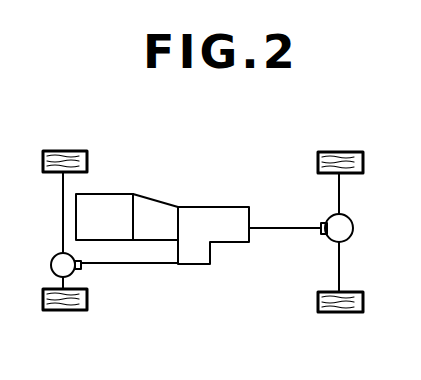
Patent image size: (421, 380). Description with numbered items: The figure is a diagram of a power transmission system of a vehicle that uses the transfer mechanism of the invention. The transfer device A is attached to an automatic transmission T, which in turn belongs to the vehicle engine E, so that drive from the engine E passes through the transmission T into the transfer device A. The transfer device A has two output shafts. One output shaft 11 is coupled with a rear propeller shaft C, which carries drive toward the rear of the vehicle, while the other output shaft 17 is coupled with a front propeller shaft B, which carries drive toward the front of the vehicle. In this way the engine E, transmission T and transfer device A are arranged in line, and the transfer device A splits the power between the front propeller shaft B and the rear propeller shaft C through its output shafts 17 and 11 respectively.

The output shaft 11 is at (251, 226).
The output shaft 17 is at (178, 264).
The vehicle engine E is at (100, 225).
The automatic transmission T is at (157, 225).
The transfer device A is at (197, 238).
The front propeller shaft B is at (125, 263).
The rear propeller shaft C is at (277, 230).